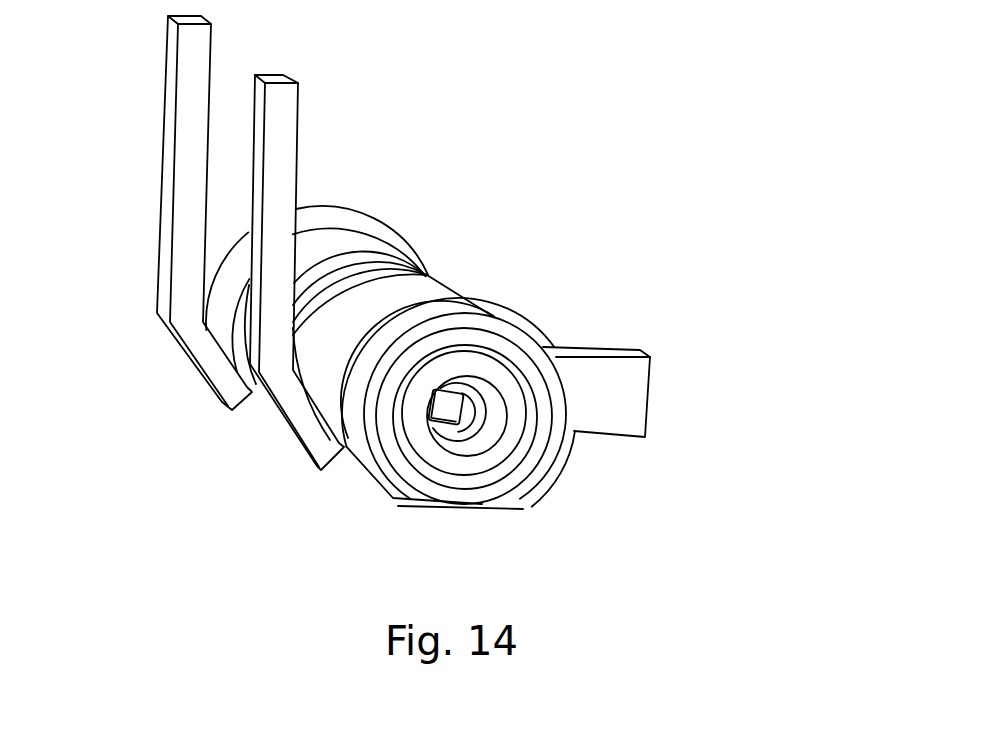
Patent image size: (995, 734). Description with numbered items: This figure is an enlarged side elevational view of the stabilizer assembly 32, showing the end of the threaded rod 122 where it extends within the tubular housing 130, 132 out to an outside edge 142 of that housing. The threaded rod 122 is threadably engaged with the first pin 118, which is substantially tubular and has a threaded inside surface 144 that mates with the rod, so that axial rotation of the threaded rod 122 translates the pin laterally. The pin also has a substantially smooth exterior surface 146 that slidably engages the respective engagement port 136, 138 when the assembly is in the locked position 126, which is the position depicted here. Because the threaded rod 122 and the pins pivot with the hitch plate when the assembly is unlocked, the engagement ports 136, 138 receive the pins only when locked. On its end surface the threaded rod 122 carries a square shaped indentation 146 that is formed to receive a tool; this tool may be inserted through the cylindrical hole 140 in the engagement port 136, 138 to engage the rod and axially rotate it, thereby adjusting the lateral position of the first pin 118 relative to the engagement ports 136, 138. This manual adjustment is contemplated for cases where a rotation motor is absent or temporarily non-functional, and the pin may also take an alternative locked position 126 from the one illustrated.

The stabilizer assembly 32 is at (140, 157).
The first pin 118 is at (420, 443).
The threaded rod 122 is at (465, 380).
The locked position 126 is at (586, 485).
The tubular housing 130 is at (428, 288).
The tubular housing 132 is at (365, 243).
The first engagement port 136 is at (472, 312).
The second engagement port 138 is at (322, 213).
The cylindrical hole 140 is at (522, 421).
The outside edge 142 is at (348, 230).
The threaded inside surface 144 is at (473, 442).
The square shaped indentation 146 is at (443, 400).